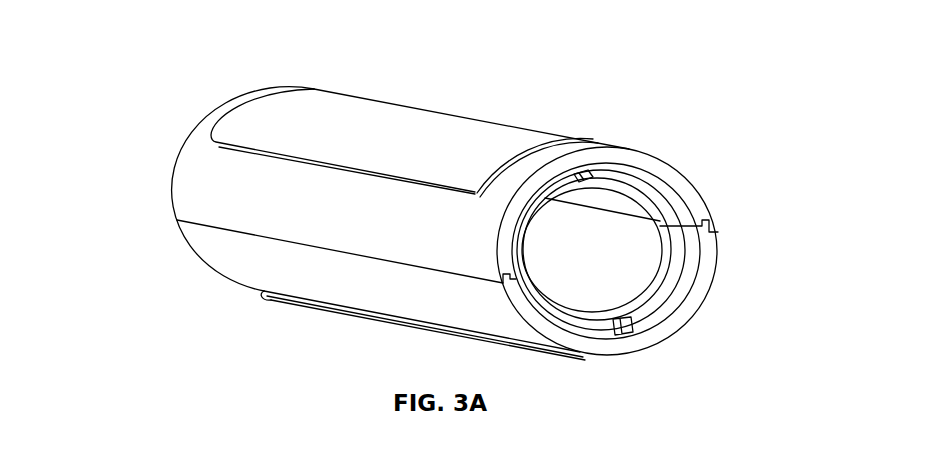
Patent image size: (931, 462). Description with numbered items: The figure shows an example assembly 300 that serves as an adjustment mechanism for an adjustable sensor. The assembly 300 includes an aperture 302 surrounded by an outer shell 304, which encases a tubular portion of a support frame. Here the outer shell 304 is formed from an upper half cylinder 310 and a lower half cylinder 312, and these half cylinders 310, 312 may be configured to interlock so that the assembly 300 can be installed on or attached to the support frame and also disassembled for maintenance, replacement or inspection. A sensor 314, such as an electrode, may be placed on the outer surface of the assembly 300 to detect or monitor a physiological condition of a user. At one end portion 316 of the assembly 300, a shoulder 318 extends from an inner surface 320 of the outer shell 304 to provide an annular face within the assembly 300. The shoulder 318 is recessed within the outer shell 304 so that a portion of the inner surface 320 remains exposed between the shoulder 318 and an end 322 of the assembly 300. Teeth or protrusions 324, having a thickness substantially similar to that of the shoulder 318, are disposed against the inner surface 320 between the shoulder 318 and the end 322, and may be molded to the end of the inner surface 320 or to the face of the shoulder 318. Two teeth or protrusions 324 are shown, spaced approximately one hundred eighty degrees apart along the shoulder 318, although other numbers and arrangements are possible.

The assembly 300 is at (247, 38).
The aperture 302 is at (648, 251).
The outer shell 304 is at (631, 150).
The upper half cylinder 310 is at (185, 183).
The lower half cylinder 312 is at (197, 245).
The sensor 314 is at (443, 112).
The end portion 316 is at (648, 102).
The shoulder 318 is at (672, 211).
The inner surface 320 is at (674, 306).
The end 322 is at (708, 248).
The teeth or protrusions 324 is at (580, 187).